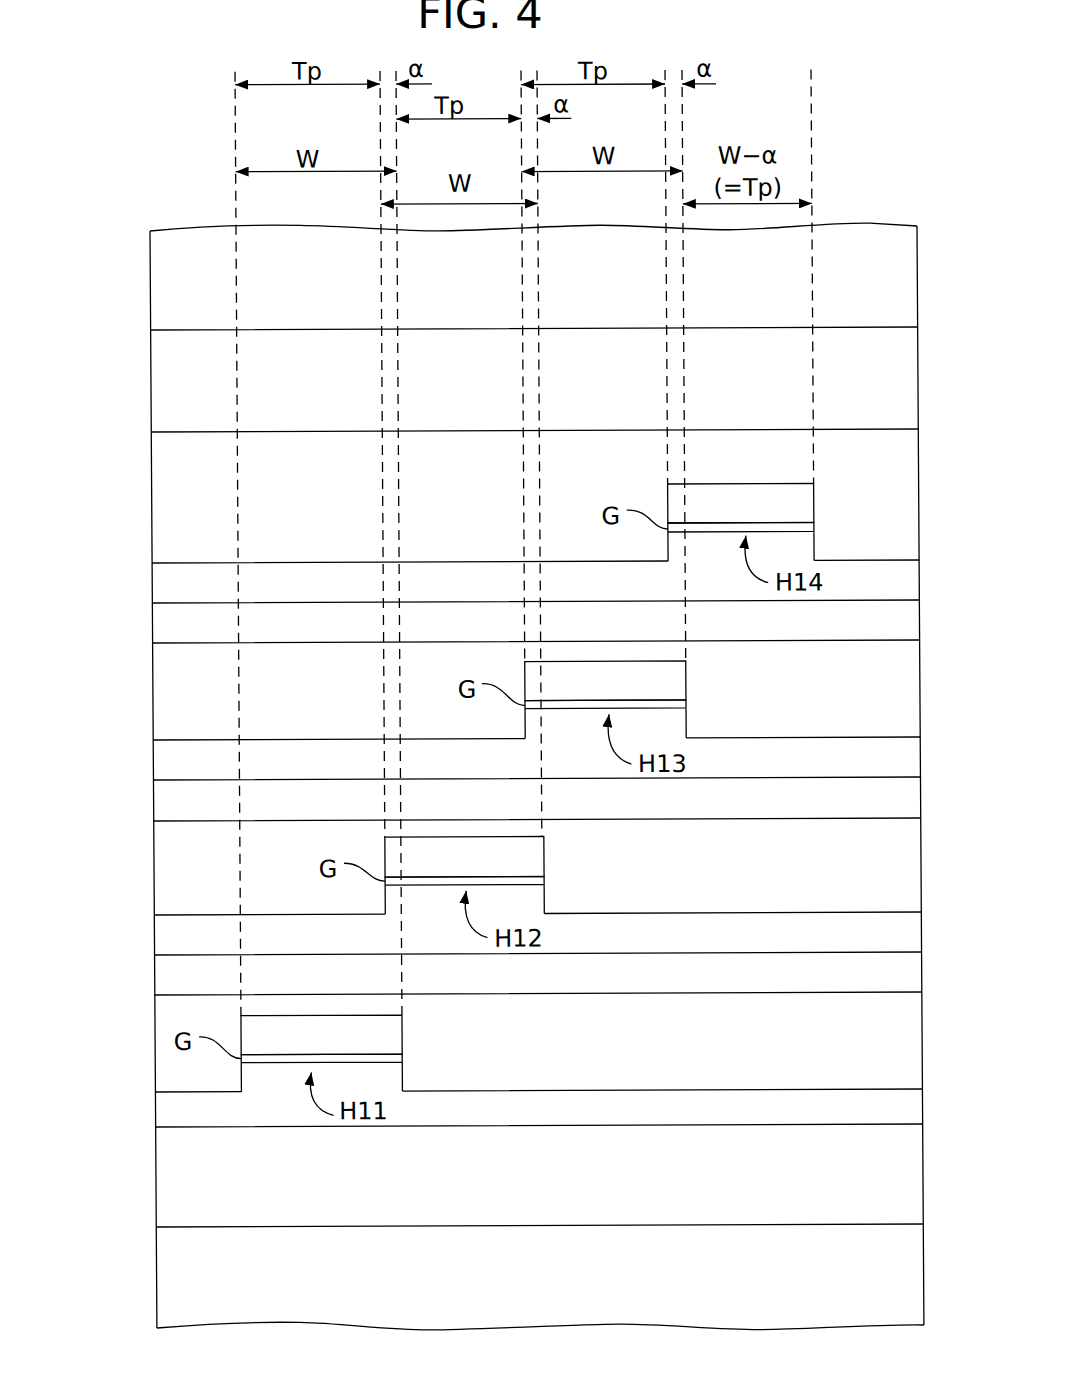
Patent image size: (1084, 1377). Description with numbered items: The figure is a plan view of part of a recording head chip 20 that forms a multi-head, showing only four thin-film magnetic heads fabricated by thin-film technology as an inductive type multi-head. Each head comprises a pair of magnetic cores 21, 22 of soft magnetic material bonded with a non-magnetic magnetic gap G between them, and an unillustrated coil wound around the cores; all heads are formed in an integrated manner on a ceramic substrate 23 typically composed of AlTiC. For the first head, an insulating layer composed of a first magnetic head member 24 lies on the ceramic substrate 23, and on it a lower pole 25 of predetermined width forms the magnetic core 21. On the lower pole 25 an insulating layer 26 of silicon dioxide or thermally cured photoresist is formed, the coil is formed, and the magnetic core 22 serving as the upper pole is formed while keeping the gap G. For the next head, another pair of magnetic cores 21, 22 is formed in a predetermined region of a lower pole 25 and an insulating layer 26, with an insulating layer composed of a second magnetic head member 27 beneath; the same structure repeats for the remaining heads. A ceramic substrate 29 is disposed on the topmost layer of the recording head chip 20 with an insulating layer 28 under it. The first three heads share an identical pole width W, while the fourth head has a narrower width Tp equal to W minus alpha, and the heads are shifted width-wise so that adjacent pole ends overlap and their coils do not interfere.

The recording head chip 20 is at (888, 227).
The magnetic core 21 is at (812, 547).
The magnetic core 22 is at (812, 502).
The ceramic substrate 23 is at (150, 1253).
The first magnetic head member 24 is at (150, 1178).
The lower pole 25 is at (150, 582).
The insulating layer 26 is at (150, 503).
The second magnetic head member 27 is at (150, 628).
The insulating layer 28 is at (150, 388).
The ceramic substrate 29 is at (150, 300).